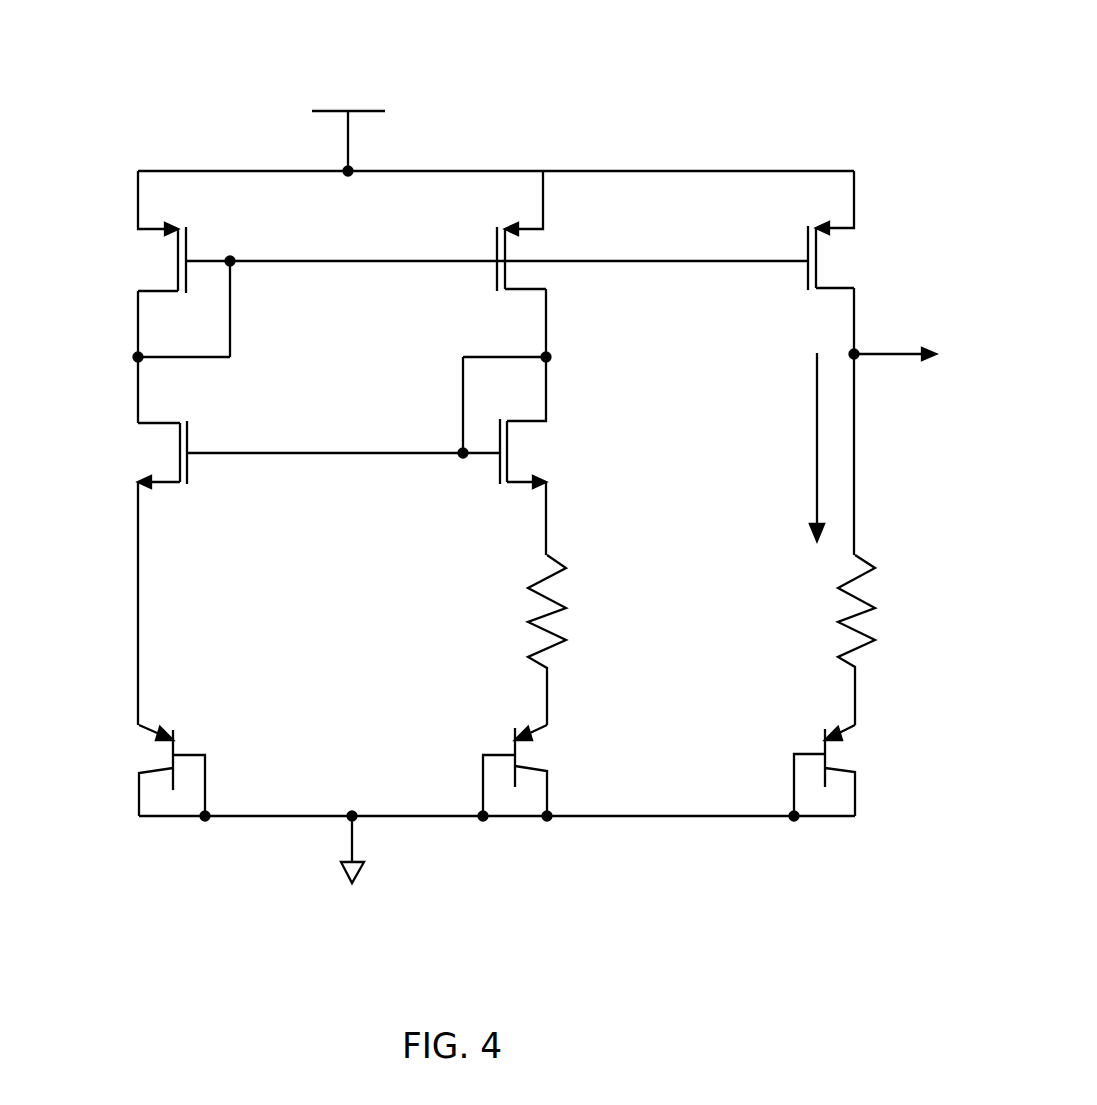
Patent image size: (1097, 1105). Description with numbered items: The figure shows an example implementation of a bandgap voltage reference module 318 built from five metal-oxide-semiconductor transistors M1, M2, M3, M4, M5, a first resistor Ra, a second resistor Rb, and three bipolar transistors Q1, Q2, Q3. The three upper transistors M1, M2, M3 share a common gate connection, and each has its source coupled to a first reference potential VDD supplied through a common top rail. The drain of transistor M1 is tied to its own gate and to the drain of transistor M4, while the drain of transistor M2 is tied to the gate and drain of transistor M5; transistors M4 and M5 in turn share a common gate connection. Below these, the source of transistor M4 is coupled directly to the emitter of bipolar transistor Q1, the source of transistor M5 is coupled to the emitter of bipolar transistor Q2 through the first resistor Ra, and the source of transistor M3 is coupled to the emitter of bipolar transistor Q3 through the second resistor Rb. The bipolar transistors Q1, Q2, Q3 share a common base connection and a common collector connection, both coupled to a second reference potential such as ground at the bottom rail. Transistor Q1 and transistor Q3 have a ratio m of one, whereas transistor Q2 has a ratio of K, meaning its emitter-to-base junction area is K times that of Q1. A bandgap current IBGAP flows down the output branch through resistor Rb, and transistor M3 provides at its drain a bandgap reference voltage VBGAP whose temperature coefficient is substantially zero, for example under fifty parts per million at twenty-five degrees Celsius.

The bandgap voltage reference module 318 is at (784, 76).
The transistor M1 is at (464, 297).
The transistor M2 is at (537, 266).
The transistor M3 is at (846, 363).
The transistor M4 is at (309, 573).
The transistor M5 is at (507, 456).
The bipolar transistor Q1 is at (149, 769).
The bipolar transistor Q2 is at (540, 768).
The bipolar transistor Q3 is at (849, 768).
The first resistor Ra is at (569, 640).
The second resistor Rb is at (880, 640).
The first reference potential VDD is at (348, 124).
The bandgap reference voltage VBGAP is at (895, 338).
The bandgap current IBGAP is at (787, 447).